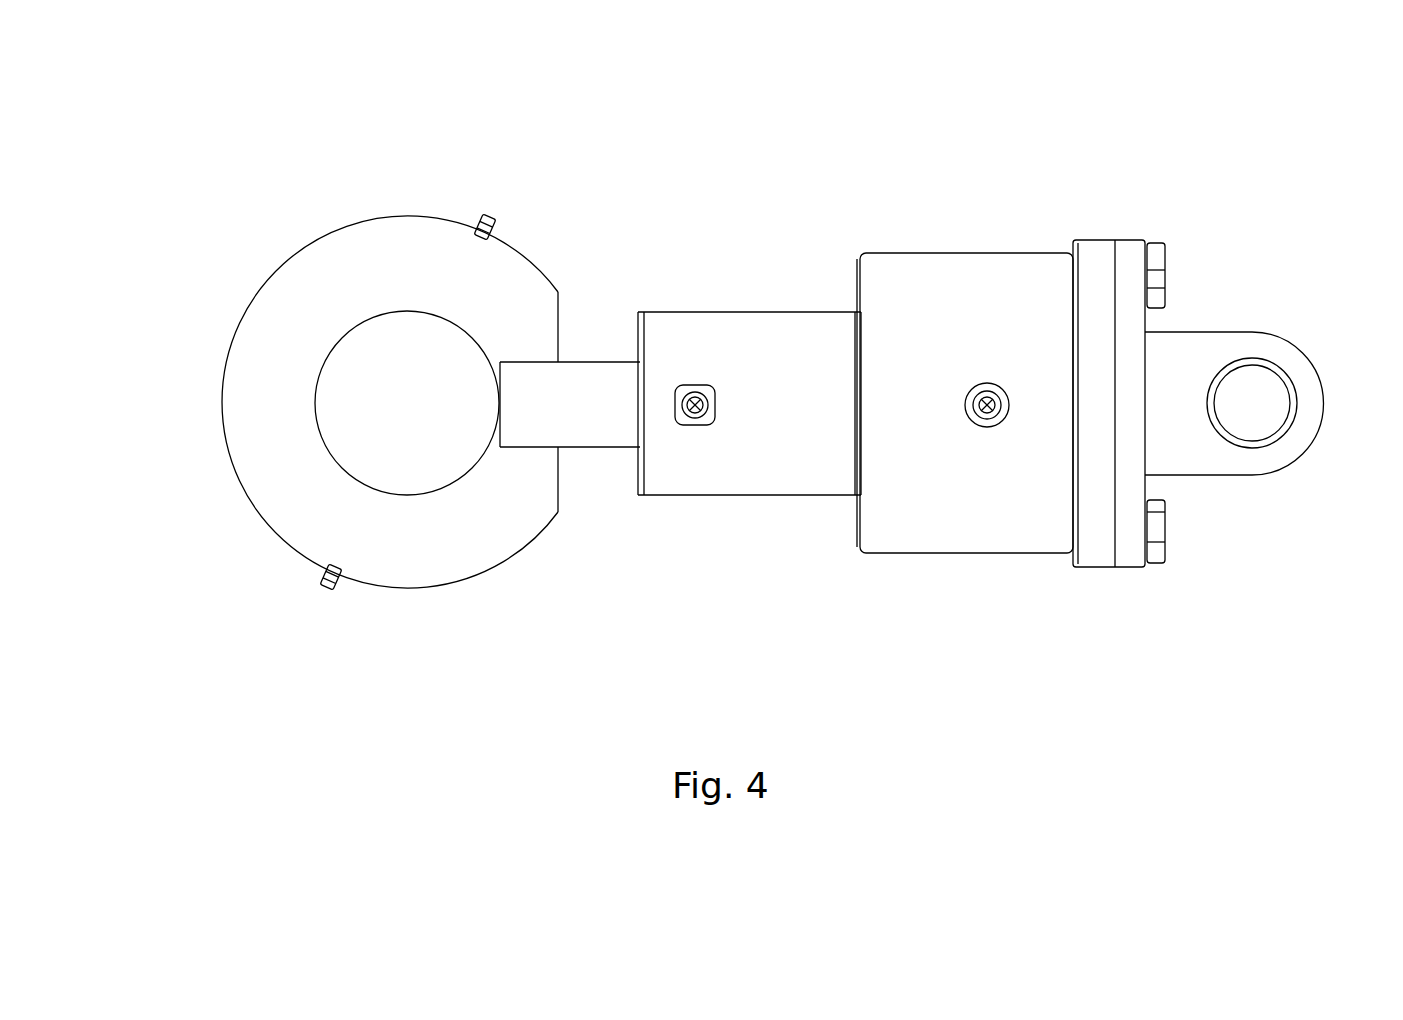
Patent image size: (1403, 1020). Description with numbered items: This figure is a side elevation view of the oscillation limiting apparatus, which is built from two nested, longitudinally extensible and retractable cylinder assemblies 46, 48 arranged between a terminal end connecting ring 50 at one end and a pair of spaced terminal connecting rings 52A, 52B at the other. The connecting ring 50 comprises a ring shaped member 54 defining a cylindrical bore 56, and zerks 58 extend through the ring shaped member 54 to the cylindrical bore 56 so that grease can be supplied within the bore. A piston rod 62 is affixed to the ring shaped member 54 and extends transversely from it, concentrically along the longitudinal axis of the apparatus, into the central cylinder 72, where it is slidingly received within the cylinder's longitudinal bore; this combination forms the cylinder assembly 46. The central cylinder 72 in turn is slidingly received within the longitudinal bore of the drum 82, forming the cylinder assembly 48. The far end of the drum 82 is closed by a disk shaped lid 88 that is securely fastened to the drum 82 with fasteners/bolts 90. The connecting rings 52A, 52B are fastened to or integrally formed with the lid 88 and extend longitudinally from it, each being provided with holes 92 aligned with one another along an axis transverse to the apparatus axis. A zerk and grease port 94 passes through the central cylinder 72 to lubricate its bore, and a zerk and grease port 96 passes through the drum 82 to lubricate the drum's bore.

The cylinder assembly 46 is at (749, 394).
The cylinder assembly 48 is at (966, 385).
The terminal end connecting ring 50 is at (370, 395).
The terminal connecting ring 52A is at (1266, 436).
The terminal connecting ring 52B is at (1234, 346).
The ring shaped member 54 is at (390, 248).
The cylindrical bore 56 is at (353, 452).
The zerks 58 is at (492, 213).
The piston rod 62 is at (575, 387).
The central cylinder 72 is at (789, 348).
The drum 82 is at (1017, 280).
The disk shaped lid 88 is at (1167, 393).
The fasteners/bolts 90 is at (1157, 283).
The holes 92 is at (1265, 367).
The zerk and grease port 94 is at (992, 414).
The zerk and grease port 96 is at (700, 412).